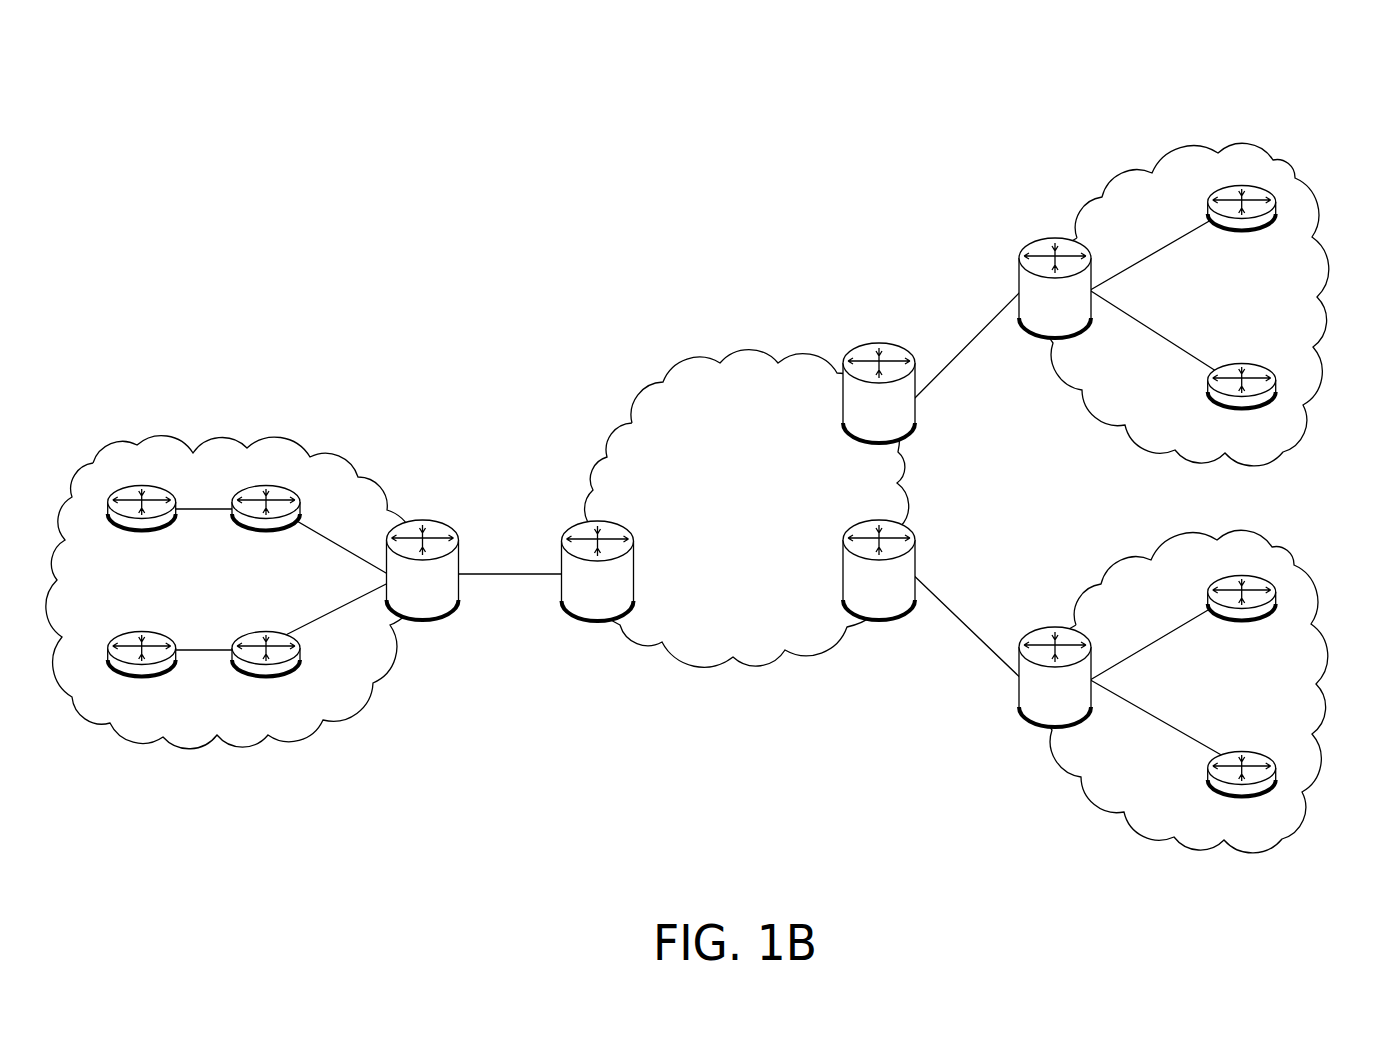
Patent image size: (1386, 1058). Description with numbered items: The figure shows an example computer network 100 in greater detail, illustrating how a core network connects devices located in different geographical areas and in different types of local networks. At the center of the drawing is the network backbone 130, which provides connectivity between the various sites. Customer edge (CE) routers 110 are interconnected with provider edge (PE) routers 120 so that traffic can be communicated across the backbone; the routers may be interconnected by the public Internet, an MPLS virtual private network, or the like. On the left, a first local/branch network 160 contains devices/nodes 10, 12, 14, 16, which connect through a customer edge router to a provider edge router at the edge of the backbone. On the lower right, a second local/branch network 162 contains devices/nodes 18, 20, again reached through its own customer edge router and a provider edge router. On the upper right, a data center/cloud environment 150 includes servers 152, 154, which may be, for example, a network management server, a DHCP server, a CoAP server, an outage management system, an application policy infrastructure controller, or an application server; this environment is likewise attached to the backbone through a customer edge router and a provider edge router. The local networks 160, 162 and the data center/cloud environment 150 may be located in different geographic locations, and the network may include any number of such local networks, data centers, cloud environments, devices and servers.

The computer network 100 is at (1283, 88).
The customer edge (CE) routers 110 is at (406, 614).
The provider edge (PE) routers 120 is at (581, 615).
The network backbone 130 is at (765, 532).
The data center/cloud environment 150 is at (1149, 166).
The server 152 is at (1242, 226).
The server 154 is at (1242, 403).
The local/branch network 160 is at (285, 428).
The local/branch network 162 is at (1069, 781).
The device/node 10 is at (142, 526).
The device/node 12 is at (266, 526).
The device/node 14 is at (142, 670).
The device/node 16 is at (266, 670).
The device/node 18 is at (1242, 791).
The device/node 20 is at (1242, 616).